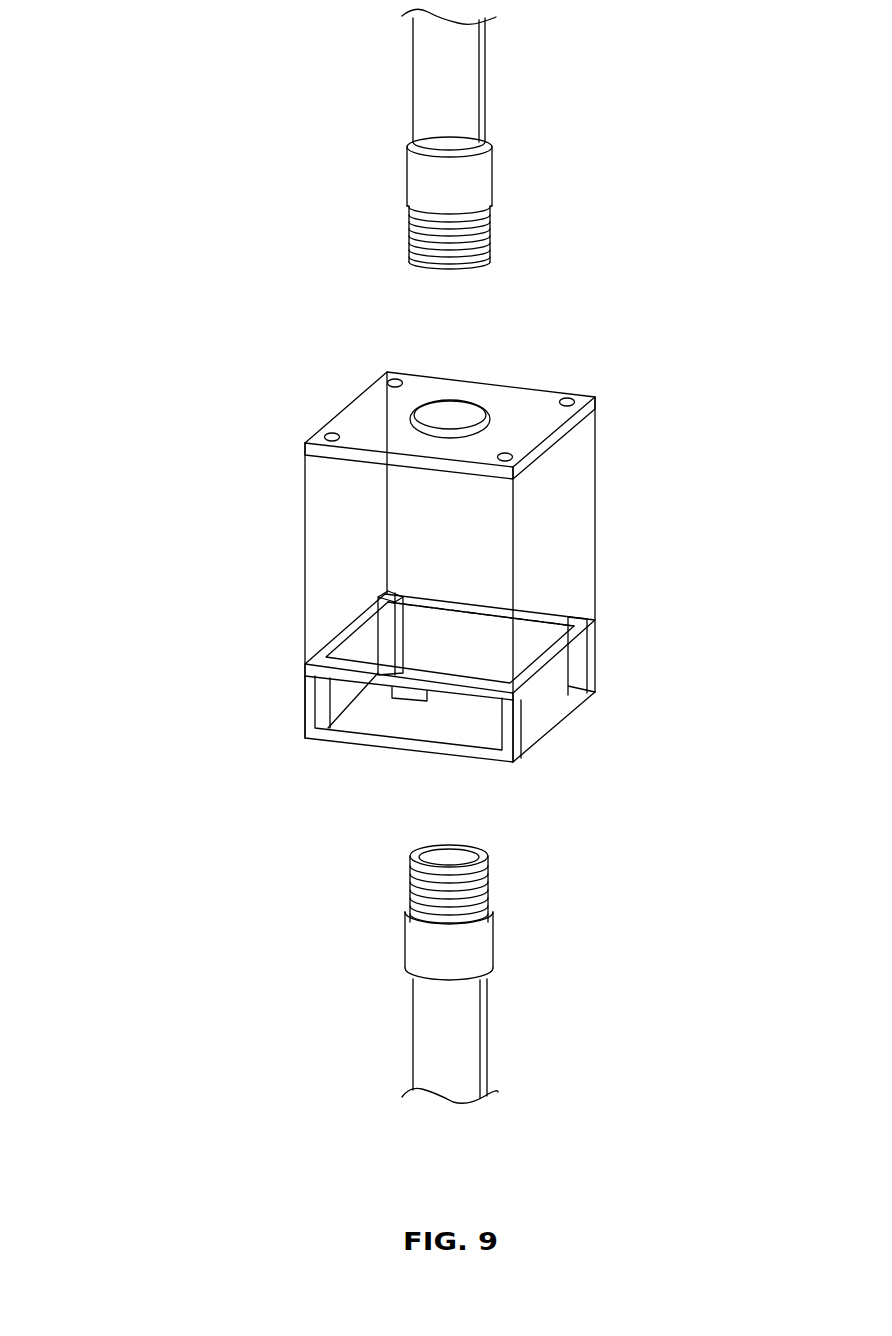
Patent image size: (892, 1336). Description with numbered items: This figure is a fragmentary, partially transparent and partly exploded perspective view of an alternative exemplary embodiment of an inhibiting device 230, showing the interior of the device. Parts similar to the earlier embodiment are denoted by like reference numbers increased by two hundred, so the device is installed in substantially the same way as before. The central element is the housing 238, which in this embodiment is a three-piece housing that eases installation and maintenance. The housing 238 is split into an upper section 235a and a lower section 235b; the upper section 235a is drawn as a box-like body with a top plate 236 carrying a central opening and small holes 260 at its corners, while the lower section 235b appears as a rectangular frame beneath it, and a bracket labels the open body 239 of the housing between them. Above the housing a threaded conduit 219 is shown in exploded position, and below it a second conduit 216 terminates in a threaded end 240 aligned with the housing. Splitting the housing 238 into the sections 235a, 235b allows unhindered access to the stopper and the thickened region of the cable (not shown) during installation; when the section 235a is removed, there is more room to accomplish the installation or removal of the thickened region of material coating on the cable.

The inhibiting device 230 is at (228, 216).
The upper conduit 219 is at (470, 82).
The upper section of the housing 235a is at (606, 497).
The top plate 236 is at (361, 401).
The mounting holes 260 is at (571, 394).
The housing 238 is at (598, 455).
The housing body 239 is at (308, 445).
The lower section of the housing 235b is at (590, 700).
The threaded end 240 is at (409, 885).
The lower conduit 216 is at (472, 1040).